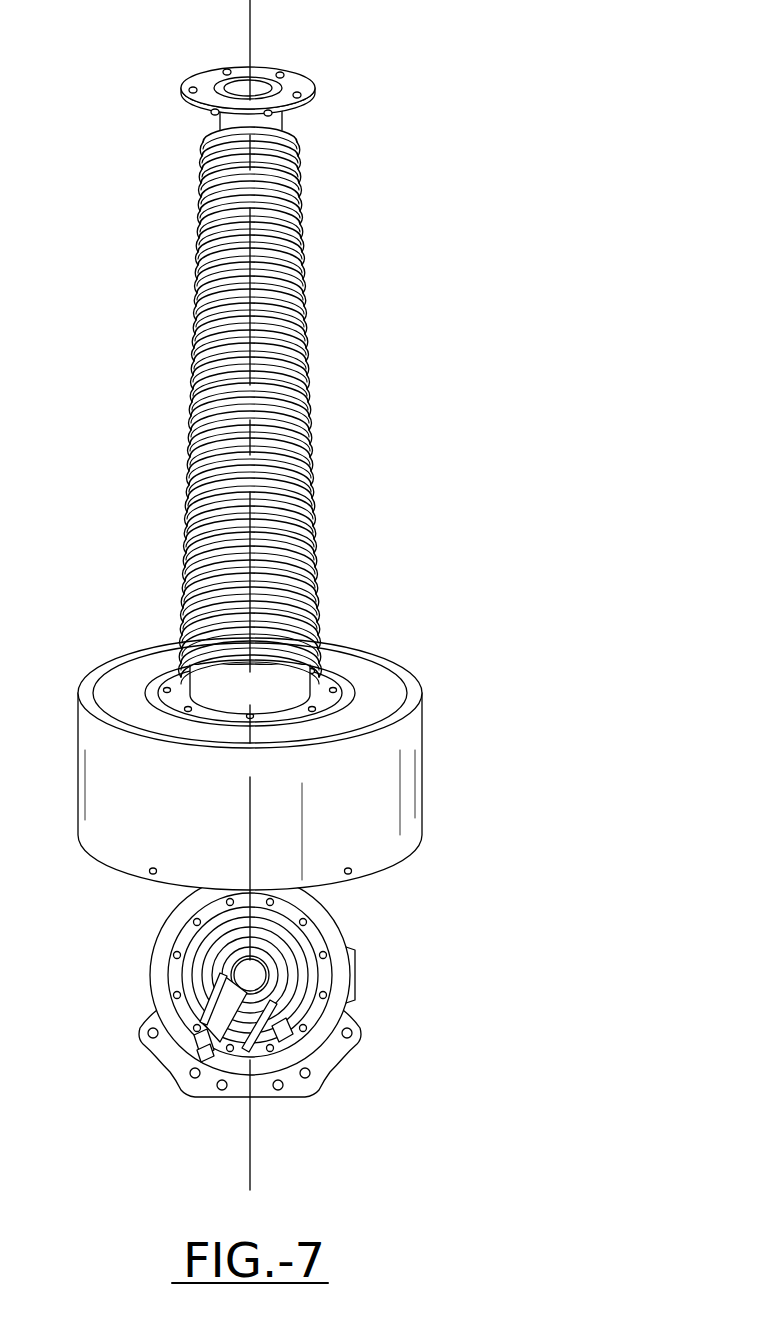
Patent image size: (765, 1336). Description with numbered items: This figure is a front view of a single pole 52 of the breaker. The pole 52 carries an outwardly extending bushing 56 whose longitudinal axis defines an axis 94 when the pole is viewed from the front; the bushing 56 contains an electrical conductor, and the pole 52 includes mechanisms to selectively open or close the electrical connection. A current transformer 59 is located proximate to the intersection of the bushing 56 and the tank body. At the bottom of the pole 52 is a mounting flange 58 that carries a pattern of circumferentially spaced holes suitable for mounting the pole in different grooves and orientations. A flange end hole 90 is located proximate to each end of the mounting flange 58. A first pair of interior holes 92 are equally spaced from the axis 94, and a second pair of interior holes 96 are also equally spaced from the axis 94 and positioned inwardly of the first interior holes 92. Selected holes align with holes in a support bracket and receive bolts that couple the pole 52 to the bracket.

The pole 52 is at (276, 595).
The bushing 56 is at (300, 247).
The mounting flange 58 is at (276, 1022).
The current transformer 59 is at (421, 760).
The flange end hole 90 is at (148, 1036).
The first pair of interior holes 92 is at (197, 1080).
The axis 94 is at (250, 12).
The second pair of interior holes 96 is at (219, 1093).